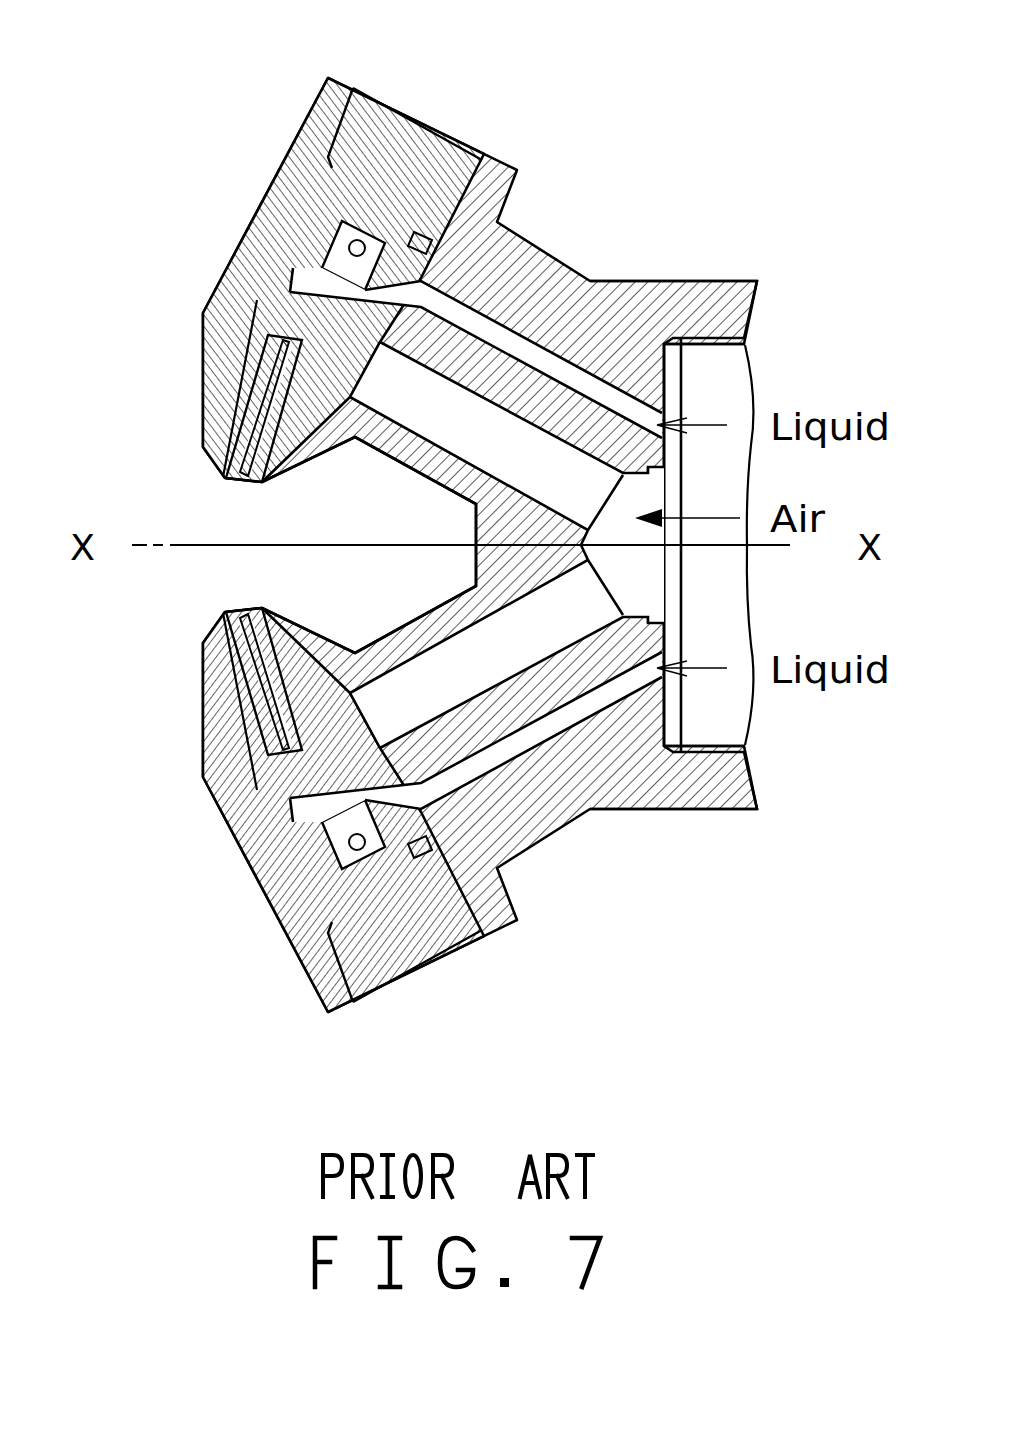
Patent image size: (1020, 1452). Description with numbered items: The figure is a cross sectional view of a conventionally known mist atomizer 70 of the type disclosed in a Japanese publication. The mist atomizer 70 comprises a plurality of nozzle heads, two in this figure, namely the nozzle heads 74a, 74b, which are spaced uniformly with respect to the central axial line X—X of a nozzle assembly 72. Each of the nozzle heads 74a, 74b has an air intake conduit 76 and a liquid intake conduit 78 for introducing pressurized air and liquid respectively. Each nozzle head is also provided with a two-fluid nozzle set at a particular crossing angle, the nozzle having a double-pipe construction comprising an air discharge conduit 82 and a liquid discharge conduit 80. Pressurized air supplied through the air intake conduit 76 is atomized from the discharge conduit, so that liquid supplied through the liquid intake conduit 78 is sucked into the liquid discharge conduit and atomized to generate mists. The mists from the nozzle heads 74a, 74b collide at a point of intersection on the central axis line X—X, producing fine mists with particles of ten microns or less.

The mist atomizer 70 is at (662, 257).
The nozzle assembly 72 is at (668, 281).
The nozzle head 74a is at (327, 78).
The nozzle head 74b is at (285, 898).
The air intake conduit 76 is at (438, 432).
The liquid intake conduit 78 is at (527, 283).
The liquid discharge conduit 80 is at (247, 457).
The air discharge conduit 82 is at (250, 333).